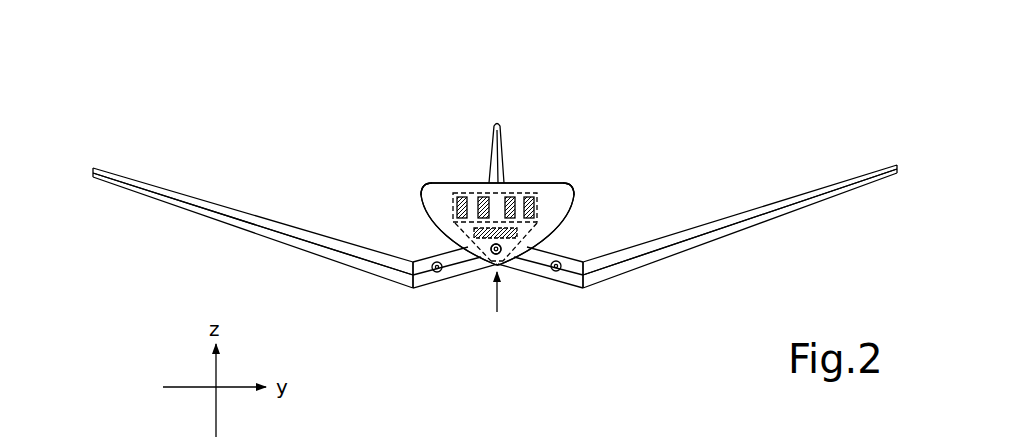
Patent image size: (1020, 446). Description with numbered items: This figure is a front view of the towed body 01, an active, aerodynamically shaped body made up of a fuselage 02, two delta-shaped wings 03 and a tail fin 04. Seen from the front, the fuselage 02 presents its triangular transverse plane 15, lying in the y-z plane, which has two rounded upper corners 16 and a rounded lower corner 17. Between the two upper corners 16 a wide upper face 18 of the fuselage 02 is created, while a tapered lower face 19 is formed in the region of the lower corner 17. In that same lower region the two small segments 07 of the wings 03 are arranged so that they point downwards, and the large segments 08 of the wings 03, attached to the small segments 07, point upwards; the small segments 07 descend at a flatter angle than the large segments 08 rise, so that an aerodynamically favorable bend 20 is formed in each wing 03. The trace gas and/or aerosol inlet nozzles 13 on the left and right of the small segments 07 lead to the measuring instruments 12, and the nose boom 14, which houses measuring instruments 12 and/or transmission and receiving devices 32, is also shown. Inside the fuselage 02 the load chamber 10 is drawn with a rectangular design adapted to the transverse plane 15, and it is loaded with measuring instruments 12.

The towed body 01 is at (204, 115).
The fuselage 02 is at (543, 233).
The wings 03 is at (246, 194).
The tail fin 04 is at (492, 157).
The small segment 07 is at (420, 268).
The large segment 08 is at (292, 244).
The load chamber 10 is at (472, 200).
The measuring instruments 12 is at (507, 237).
The trace gas and/or aerosol inlet nozzles 13 is at (438, 273).
The nose boom 14 is at (493, 254).
The transverse plane 15 is at (410, 199).
The upper corners 16 is at (413, 184).
The lower corner 17 is at (504, 305).
The upper face 18 is at (513, 183).
The lower face 19 is at (500, 259).
The bend 20 is at (405, 300).
The transmission and receiving devices 32 is at (496, 249).